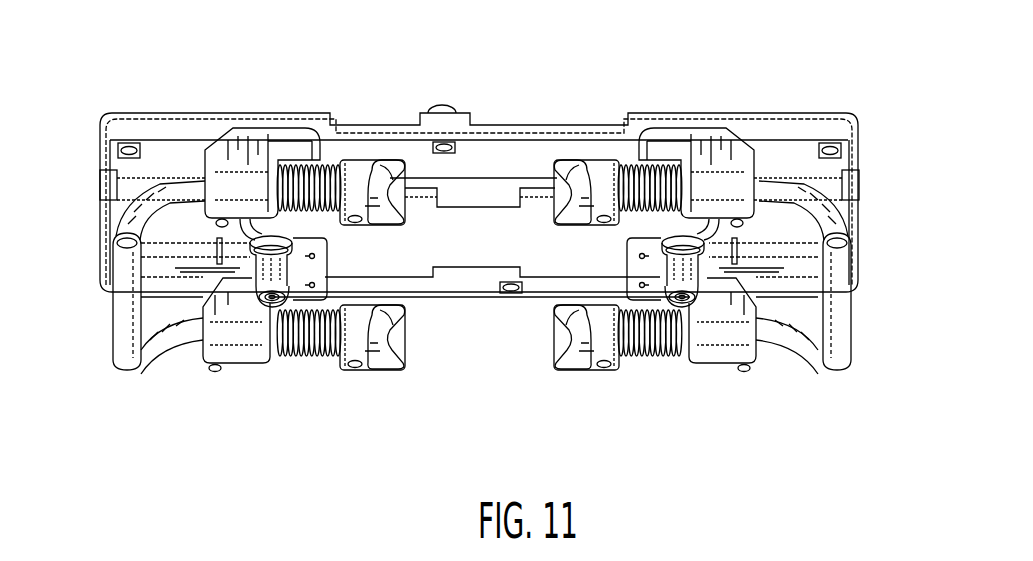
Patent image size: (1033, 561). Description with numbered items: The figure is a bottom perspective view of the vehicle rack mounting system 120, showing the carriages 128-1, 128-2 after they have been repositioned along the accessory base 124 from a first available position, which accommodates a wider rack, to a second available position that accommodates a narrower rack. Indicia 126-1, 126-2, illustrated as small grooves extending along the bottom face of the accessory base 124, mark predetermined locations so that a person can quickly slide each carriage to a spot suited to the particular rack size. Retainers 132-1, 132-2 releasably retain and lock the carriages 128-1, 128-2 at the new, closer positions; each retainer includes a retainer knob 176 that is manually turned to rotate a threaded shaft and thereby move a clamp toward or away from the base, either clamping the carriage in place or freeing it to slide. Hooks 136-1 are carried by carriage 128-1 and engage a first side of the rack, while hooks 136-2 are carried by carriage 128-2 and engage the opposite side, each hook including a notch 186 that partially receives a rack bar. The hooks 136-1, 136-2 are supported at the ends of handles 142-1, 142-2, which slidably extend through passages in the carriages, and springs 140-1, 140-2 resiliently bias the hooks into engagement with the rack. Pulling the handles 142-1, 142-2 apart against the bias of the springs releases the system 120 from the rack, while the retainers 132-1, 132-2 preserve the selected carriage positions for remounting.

The vehicle rack mounting system 120 is at (69, 127).
The accessory base 124 is at (822, 114).
The indicia 126-1 is at (197, 257).
The indicia 126-2 is at (758, 252).
The carriage 128-1 is at (262, 140).
The carriage 128-2 is at (727, 155).
The retainer 132-1 is at (244, 269).
The retainer 132-2 is at (704, 268).
The hook 136-1 is at (360, 145).
The hook 136-2 is at (597, 177).
The spring 140-1 is at (312, 172).
The spring 140-2 is at (662, 172).
The handle 142-1 is at (123, 305).
The handle 142-2 is at (845, 328).
The retainer knob 176 is at (263, 307).
The notch 186 is at (400, 179).